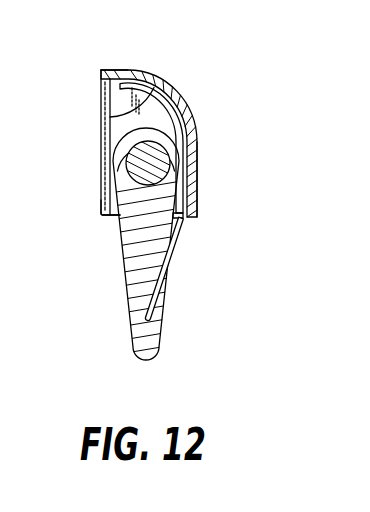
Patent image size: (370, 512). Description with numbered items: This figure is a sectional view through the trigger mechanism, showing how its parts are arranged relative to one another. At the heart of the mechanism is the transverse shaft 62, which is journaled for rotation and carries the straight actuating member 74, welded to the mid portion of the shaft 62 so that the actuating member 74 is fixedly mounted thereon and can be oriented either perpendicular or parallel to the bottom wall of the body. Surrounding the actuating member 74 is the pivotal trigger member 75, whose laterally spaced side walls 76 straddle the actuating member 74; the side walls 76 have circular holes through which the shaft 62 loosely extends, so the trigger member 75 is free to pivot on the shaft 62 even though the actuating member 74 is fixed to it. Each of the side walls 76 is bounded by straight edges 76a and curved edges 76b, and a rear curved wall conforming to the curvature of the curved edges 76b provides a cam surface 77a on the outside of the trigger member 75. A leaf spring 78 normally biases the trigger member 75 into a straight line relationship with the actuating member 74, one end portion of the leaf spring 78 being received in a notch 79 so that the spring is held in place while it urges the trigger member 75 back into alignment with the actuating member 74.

The transverse shaft 62 is at (131, 164).
The actuating member 74 is at (123, 282).
The pivotal trigger member 75 is at (196, 130).
The side walls 76 is at (116, 93).
The straight edges 76a is at (98, 192).
The curved edges 76b is at (108, 70).
The cam surface 77a is at (166, 86).
The leaf spring 78 is at (118, 118).
The notch 79 is at (157, 313).